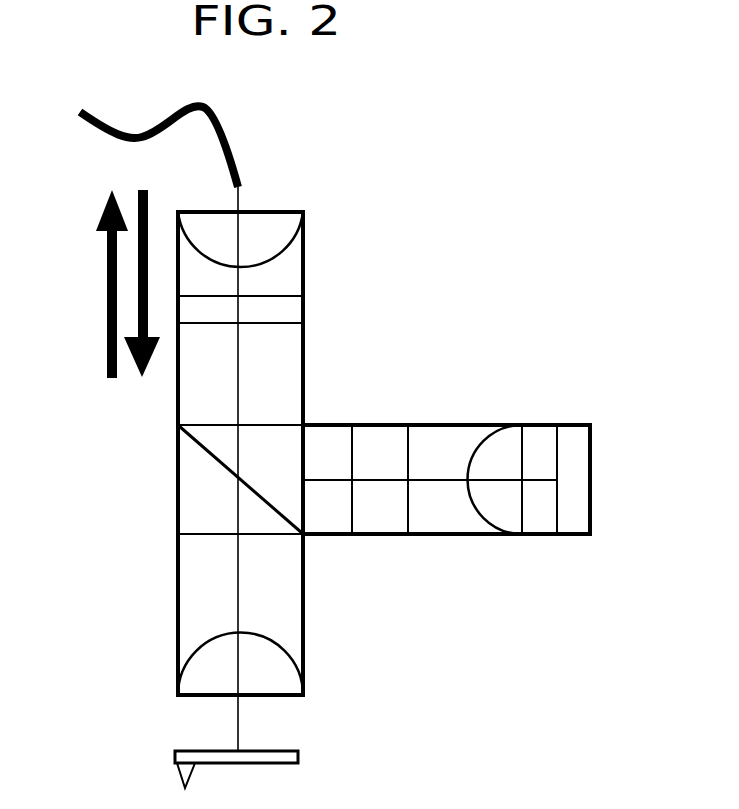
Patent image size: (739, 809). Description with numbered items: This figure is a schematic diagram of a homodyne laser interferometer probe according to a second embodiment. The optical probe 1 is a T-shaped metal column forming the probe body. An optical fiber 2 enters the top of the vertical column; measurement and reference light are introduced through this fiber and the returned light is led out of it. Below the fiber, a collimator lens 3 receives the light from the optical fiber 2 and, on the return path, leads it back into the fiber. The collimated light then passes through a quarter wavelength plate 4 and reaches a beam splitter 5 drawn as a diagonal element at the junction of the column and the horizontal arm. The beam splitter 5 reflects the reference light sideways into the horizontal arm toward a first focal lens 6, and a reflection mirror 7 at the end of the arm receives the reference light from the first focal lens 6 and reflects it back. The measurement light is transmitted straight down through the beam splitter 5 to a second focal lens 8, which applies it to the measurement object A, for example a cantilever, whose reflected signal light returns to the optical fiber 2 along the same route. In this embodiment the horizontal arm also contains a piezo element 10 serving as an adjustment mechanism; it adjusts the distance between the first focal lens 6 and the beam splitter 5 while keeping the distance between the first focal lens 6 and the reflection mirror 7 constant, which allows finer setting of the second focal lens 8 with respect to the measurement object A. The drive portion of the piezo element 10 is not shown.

The optical probe 1 is at (305, 372).
The optical fiber 2 is at (230, 147).
The collimator lens 3 is at (288, 227).
The ¼ wavelength plate 4 is at (287, 305).
The beam splitter 5 is at (175, 465).
The first focal lens 6 is at (511, 523).
The reflection mirror 7 is at (576, 523).
The second focal lens 8 is at (187, 683).
The piezo element 10 is at (388, 523).
The measurement object A is at (175, 754).